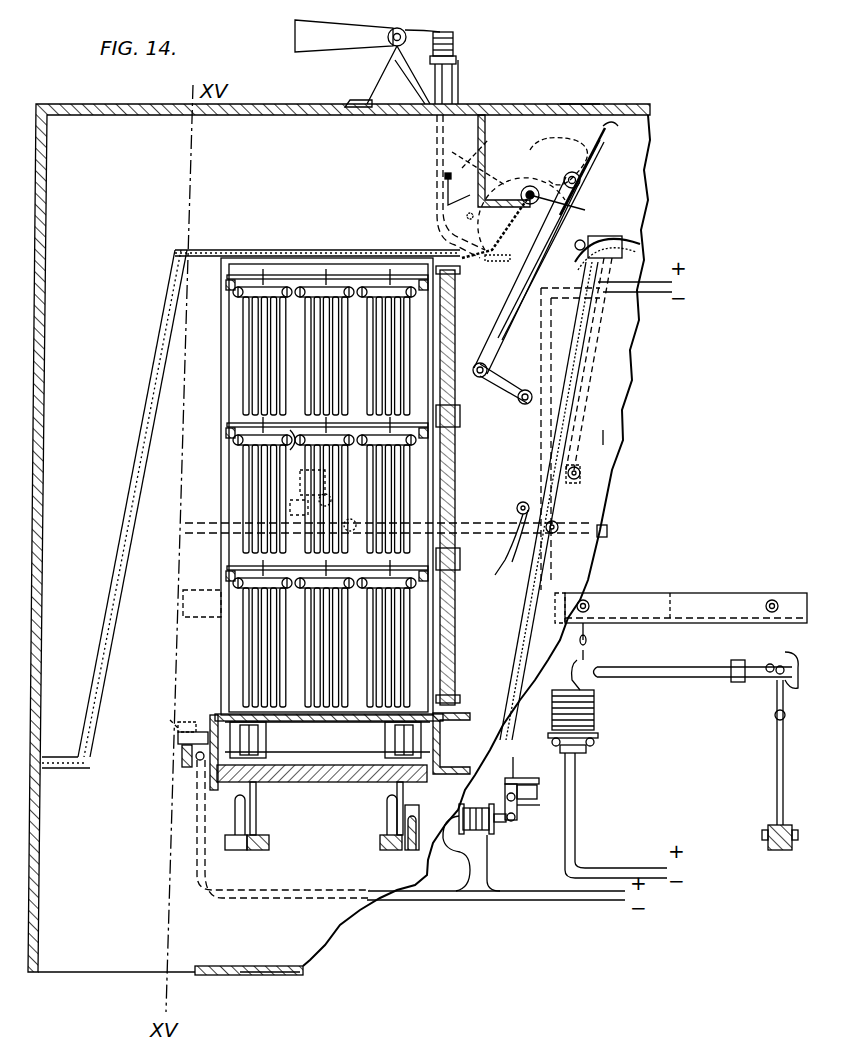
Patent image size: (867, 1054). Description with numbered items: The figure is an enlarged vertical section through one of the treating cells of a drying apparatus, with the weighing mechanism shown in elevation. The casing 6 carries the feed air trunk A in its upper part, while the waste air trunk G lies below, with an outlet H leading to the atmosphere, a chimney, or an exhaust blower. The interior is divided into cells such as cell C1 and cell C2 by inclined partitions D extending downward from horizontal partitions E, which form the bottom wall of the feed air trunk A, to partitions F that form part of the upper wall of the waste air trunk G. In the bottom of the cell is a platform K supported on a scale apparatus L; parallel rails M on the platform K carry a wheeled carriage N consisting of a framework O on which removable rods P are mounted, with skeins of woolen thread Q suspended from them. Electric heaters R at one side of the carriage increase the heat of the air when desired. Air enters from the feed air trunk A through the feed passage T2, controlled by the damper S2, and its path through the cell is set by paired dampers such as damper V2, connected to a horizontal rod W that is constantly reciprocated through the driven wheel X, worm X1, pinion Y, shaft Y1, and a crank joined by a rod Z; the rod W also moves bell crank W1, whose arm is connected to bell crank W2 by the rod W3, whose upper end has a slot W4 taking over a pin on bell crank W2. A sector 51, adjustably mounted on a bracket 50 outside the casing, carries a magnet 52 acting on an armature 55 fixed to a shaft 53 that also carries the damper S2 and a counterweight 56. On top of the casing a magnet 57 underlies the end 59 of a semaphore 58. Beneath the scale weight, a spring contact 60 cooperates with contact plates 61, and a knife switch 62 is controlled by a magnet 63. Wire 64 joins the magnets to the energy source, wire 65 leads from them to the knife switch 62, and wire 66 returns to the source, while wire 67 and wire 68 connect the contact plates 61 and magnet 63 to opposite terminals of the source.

The outlet H is at (66, 975).
The feed air trunk A is at (646, 196).
The casing 6 is at (545, 110).
The waste air trunk G is at (270, 946).
The cell C2 is at (251, 509).
The framework O is at (220, 482).
The removable rods P is at (290, 278).
The skeins of woolen thread Q is at (316, 320).
The electric heaters R is at (456, 485).
The driven wheel X is at (290, 423).
The worm X1 is at (325, 480).
The pinion Y is at (339, 525).
The shaft Y1 is at (289, 526).
The rod Z is at (387, 517).
The wheeled carriage N is at (329, 736).
The platform K is at (312, 784).
The parallel rails M is at (255, 760).
The partitions F is at (451, 743).
The scale apparatus L is at (380, 850).
The contact plates 61 is at (178, 738).
The spring contact 60 is at (178, 727).
The wire 67 is at (420, 902).
The wire 68 is at (586, 903).
The magnet 63 is at (482, 835).
The knife switch 62 is at (520, 806).
The horizontal rod W is at (607, 530).
The inclined partitions D is at (540, 565).
The slot W4 is at (620, 222).
The horizontal partitions E is at (600, 248).
The bell crank W2 is at (624, 250).
The rod W3 is at (603, 398).
The cell C1 is at (603, 437).
The bell crank W1 is at (600, 478).
The damper V2 is at (577, 320).
The wire 65 is at (545, 300).
The wire 64 is at (650, 281).
The wire 66 is at (645, 295).
The bracket 50 is at (522, 274).
The counterweight 56 is at (604, 126).
The damper S2 is at (547, 209).
The feed passage T2 is at (551, 240).
The shaft 53 is at (534, 219).
The magnet 52 is at (470, 158).
The armature 55 is at (470, 146).
The sector 51 is at (462, 218).
The semaphore 58 is at (360, 42).
The semaphore end 59 is at (442, 30).
The magnet 57 is at (455, 48).